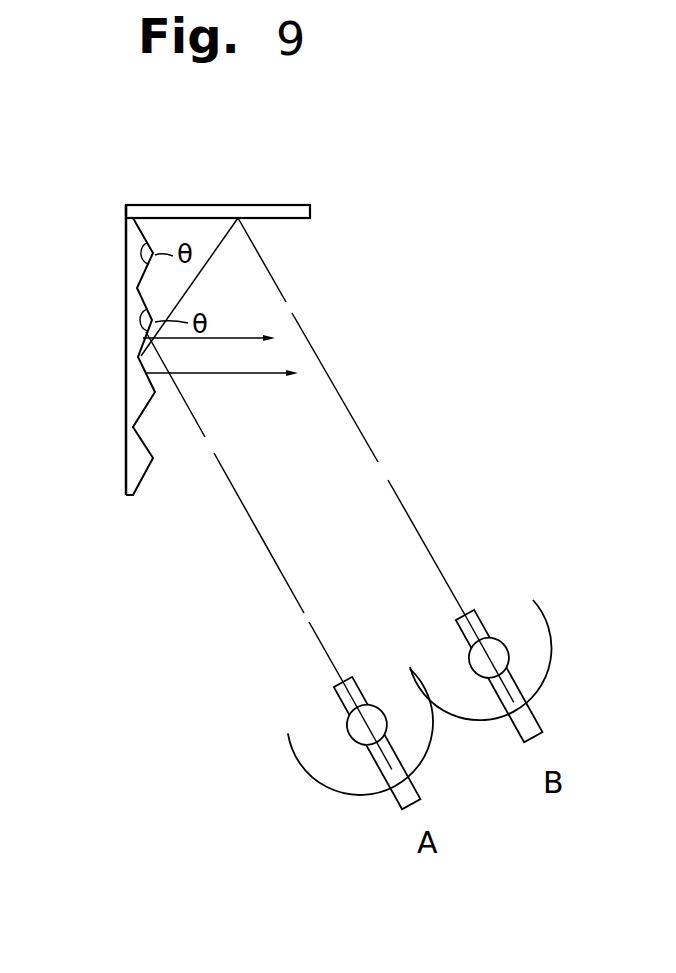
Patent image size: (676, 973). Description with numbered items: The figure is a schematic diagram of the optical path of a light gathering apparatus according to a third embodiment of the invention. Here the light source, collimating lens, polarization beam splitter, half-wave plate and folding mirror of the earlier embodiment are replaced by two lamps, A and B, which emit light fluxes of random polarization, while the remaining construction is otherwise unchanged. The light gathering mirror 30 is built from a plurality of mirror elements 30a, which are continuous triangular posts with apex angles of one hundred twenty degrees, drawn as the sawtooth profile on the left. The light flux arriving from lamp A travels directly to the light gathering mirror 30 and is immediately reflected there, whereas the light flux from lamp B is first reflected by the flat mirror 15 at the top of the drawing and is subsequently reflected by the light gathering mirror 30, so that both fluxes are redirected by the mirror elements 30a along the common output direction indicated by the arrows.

The mirror 15 is at (303, 220).
The light gathering mirror 30 is at (97, 350).
The mirror elements 30a is at (140, 315).